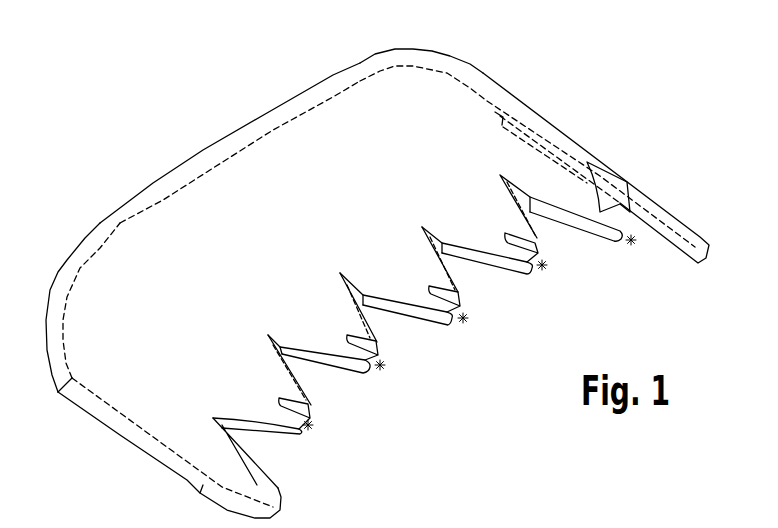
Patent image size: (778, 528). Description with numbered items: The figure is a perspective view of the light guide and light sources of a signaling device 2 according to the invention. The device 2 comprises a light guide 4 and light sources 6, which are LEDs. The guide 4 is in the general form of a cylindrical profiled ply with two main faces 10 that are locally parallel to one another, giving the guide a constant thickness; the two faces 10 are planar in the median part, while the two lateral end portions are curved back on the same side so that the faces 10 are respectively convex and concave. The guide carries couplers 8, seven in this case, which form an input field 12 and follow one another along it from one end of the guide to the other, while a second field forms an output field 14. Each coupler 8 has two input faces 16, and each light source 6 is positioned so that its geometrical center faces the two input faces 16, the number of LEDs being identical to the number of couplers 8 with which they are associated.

The device 2 is at (592, 75).
The light guide 4 is at (486, 71).
The light sources 6 is at (382, 368).
The couplers 8 is at (310, 392).
The main faces 10 is at (215, 185).
The input field 12 is at (307, 443).
The output field 14 is at (83, 285).
The input faces 16 is at (548, 251).